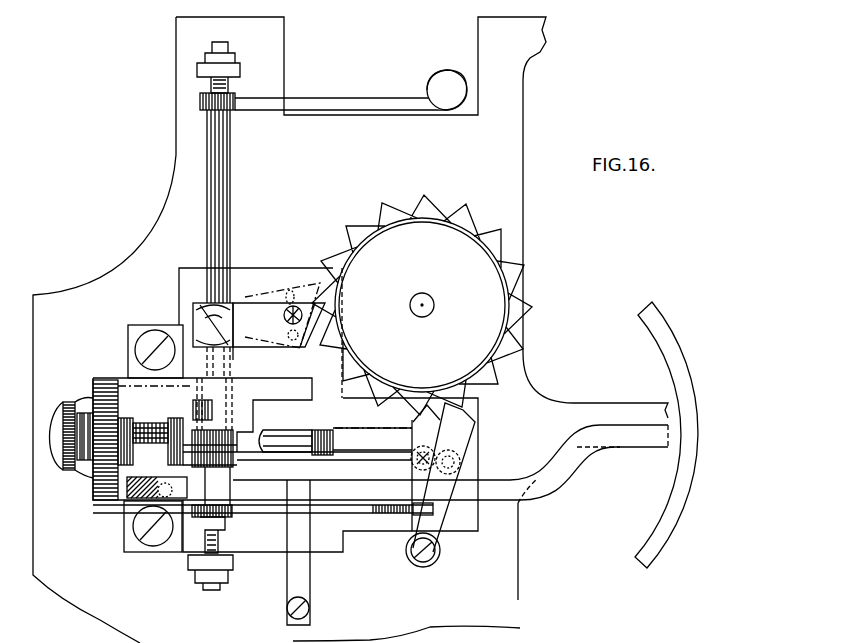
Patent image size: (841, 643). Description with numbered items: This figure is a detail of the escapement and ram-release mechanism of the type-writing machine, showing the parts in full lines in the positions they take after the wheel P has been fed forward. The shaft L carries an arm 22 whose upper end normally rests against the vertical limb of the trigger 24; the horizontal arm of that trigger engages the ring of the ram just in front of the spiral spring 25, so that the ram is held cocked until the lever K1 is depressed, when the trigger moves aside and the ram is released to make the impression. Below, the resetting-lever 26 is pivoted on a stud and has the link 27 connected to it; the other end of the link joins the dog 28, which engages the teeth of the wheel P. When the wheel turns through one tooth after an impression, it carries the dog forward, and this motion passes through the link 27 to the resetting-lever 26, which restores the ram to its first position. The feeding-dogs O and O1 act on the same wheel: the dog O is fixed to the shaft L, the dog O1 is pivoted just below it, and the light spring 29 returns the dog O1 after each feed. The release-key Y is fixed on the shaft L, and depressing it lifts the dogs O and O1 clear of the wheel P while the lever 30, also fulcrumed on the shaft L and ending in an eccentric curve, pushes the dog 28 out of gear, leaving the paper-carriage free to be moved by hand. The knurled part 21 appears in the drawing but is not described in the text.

The knurled gear wheel 21 is at (93, 392).
The arm 22 is at (180, 440).
The trigger 24 is at (222, 426).
The spiral spring 25 is at (162, 412).
The resetting-lever 26 is at (157, 487).
The link 27 is at (330, 458).
The dog 28 is at (463, 432).
The light spring 29 is at (305, 349).
The lever 30 is at (270, 505).
The shaft L is at (229, 170).
The feeding-dog O is at (279, 318).
The feeding-dog O1 is at (282, 309).
The wheel P is at (422, 305).
The release-key Y is at (351, 90).
The lever K1 is at (565, 480).